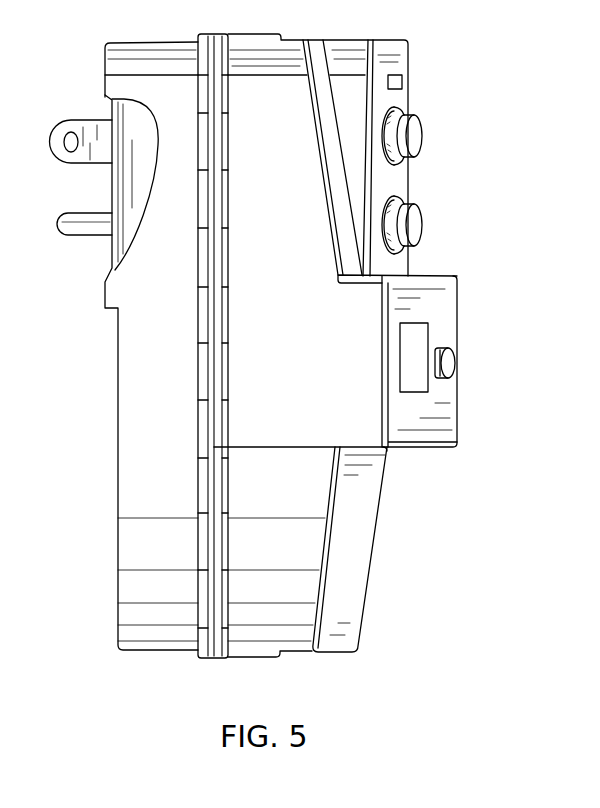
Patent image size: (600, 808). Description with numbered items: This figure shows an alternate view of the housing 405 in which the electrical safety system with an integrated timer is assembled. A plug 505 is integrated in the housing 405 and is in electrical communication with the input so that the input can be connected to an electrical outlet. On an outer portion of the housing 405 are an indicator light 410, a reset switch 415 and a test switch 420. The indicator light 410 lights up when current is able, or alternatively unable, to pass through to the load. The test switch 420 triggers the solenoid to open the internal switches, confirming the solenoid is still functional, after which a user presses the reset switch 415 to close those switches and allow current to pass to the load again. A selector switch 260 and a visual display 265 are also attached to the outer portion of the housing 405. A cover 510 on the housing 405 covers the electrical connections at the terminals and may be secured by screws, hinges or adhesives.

The housing 405 is at (152, 46).
The plug 505 is at (78, 125).
The indicator light 410 is at (403, 82).
The reset switch 415 is at (417, 137).
The test switch 420 is at (416, 229).
The visual display 265 is at (403, 360).
The selector switch 260 is at (456, 363).
The cover 510 is at (362, 563).